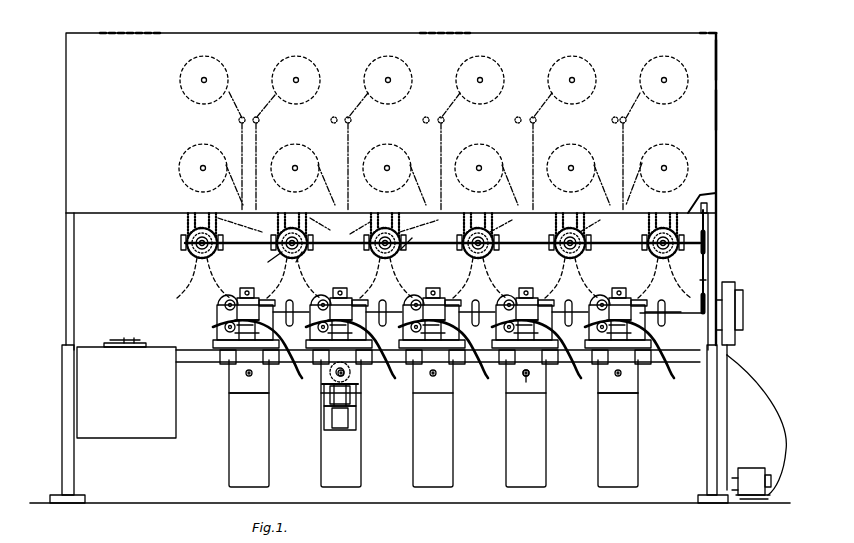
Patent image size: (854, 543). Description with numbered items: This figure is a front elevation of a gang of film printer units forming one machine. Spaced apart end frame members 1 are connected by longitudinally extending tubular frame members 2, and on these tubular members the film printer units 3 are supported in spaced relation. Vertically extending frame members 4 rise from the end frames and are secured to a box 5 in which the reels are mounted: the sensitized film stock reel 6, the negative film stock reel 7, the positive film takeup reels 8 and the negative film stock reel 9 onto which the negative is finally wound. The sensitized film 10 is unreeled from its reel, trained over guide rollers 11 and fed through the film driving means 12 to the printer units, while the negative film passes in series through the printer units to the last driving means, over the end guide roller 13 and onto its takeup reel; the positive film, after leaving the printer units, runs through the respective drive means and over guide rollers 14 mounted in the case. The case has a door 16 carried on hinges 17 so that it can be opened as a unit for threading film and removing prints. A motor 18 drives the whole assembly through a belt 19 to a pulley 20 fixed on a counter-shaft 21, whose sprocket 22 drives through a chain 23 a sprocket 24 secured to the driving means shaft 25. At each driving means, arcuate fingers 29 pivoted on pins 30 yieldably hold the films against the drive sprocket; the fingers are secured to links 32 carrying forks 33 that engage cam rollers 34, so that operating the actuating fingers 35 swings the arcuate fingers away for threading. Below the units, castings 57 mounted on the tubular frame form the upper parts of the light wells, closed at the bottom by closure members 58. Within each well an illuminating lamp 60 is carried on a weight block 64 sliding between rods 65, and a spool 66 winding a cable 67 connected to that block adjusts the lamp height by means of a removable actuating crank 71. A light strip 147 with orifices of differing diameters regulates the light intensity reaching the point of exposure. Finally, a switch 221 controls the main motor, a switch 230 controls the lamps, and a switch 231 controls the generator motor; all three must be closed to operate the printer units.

The end frame member 1 is at (62, 460).
The tubular frame member 2 is at (198, 356).
The film printer unit 3 is at (215, 312).
The vertically extending frame member 4 is at (66, 265).
The box 5 is at (716, 56).
The sensitized film stock reel 6 is at (316, 58).
The negative film stock reel 7 is at (688, 152).
The positive film takeup reel 8 is at (218, 58).
The negative film stock reel 9 is at (196, 146).
The sensitized film 10 is at (626, 134).
The guide roller 11 is at (258, 206).
The film driving means 12 is at (186, 238).
The end guide roller 13 is at (229, 187).
The guide roller 14 is at (477, 186).
The door 16 is at (720, 104).
The hinge 17 is at (90, 33).
The motor 18 is at (752, 468).
The belt 19 is at (768, 420).
The pulley 20 is at (742, 332).
The counter-shaft 21 is at (694, 316).
The sprocket 22 is at (736, 302).
The chain 23 is at (708, 282).
The sprocket 24 is at (708, 212).
The driving means shaft 25 is at (694, 250).
The arcuate finger 29 is at (280, 265).
The pin 30 is at (276, 226).
The link 32 is at (413, 237).
The fork 33 is at (423, 223).
The cam roller 34 is at (357, 227).
The actuating finger 35 is at (555, 227).
The casting 57 is at (604, 384).
The closure member 58 is at (269, 462).
The illuminating lamp 60 is at (350, 378).
The weight block 64 is at (358, 400).
The rod 65 is at (324, 424).
The spool 66 is at (330, 386).
The cable 67 is at (268, 416).
The actuating crank 71 is at (524, 378).
The light strip 147 is at (455, 358).
The switch 221 is at (100, 347).
The switch 230 is at (118, 343).
The switch 231 is at (136, 343).